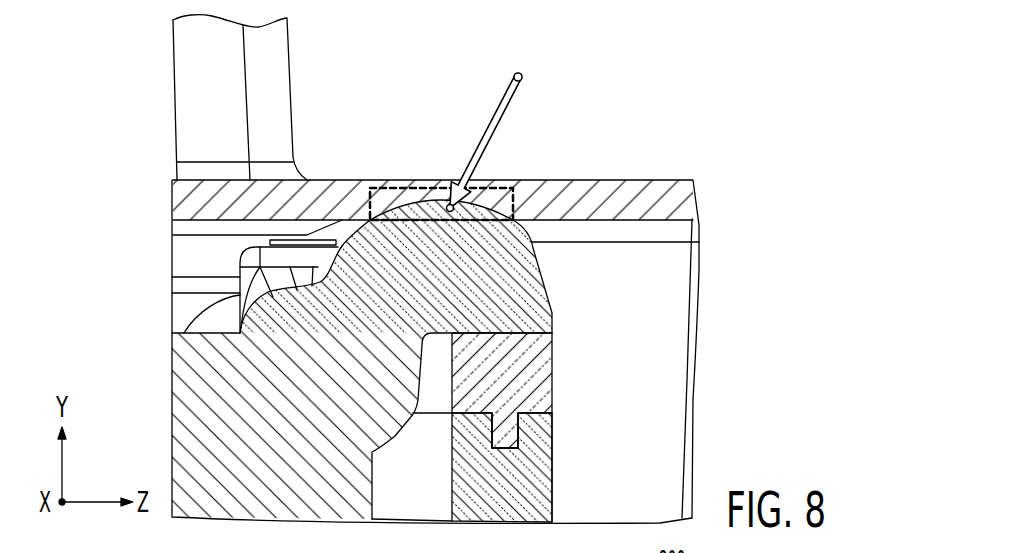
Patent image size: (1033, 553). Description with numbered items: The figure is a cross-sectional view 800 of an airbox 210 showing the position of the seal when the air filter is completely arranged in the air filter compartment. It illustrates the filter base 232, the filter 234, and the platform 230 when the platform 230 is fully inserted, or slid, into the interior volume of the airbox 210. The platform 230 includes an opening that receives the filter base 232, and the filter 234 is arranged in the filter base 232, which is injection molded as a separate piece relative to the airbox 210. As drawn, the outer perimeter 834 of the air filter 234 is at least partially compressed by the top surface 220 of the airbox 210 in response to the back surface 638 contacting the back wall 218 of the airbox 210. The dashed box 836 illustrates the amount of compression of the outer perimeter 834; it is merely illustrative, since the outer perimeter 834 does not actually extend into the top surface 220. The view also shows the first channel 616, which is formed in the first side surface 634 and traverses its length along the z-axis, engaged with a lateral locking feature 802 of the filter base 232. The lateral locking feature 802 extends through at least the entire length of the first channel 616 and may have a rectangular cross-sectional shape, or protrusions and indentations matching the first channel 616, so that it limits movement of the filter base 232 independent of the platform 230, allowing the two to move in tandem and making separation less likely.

The cross-sectional view 800 is at (670, 76).
The airbox 210 is at (672, 167).
The top surface 220 is at (325, 190).
The dashed box 836 is at (387, 188).
The outer perimeter 834 is at (535, 241).
The platform 230 is at (153, 346).
The filter 234 is at (257, 449).
The back wall 218 is at (382, 497).
The back surface 638 is at (443, 416).
The filter base 232 is at (492, 384).
The lateral locking feature 802 is at (505, 420).
The first channel 616 is at (518, 447).
The first side surface 634 is at (553, 481).